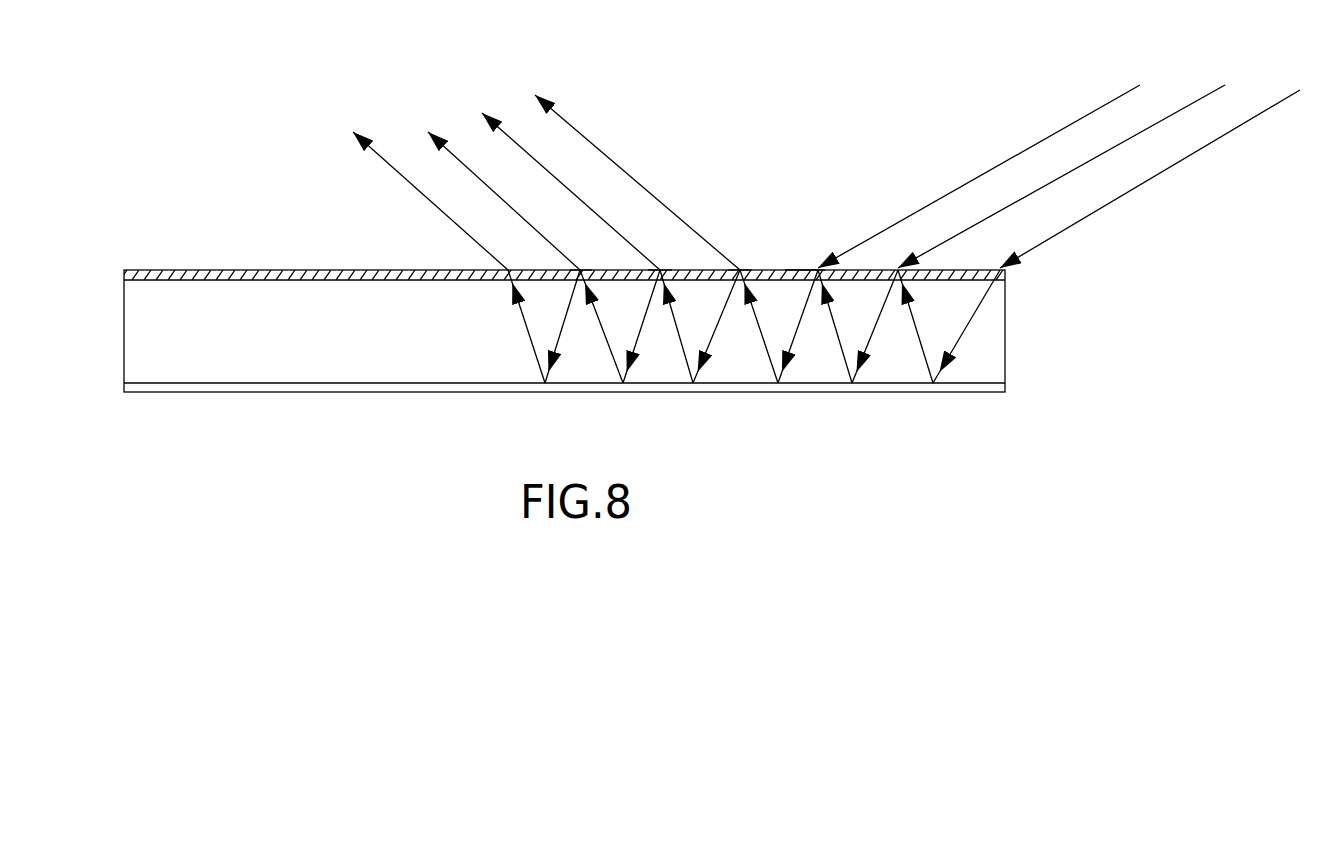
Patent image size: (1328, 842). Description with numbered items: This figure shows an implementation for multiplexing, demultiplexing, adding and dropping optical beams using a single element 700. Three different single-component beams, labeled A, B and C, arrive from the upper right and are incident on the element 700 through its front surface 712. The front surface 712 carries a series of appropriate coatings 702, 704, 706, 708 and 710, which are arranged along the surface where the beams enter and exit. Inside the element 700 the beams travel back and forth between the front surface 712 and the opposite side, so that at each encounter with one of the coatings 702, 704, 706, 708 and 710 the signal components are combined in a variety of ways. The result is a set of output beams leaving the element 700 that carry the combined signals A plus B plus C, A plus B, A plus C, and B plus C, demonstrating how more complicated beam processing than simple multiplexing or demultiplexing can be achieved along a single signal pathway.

The element 700 is at (815, 111).
The coating 702 is at (808, 257).
The coating 704 is at (737, 270).
The coating 706 is at (655, 270).
The coating 708 is at (599, 256).
The coating 710 is at (421, 258).
The front surface 712 is at (441, 283).